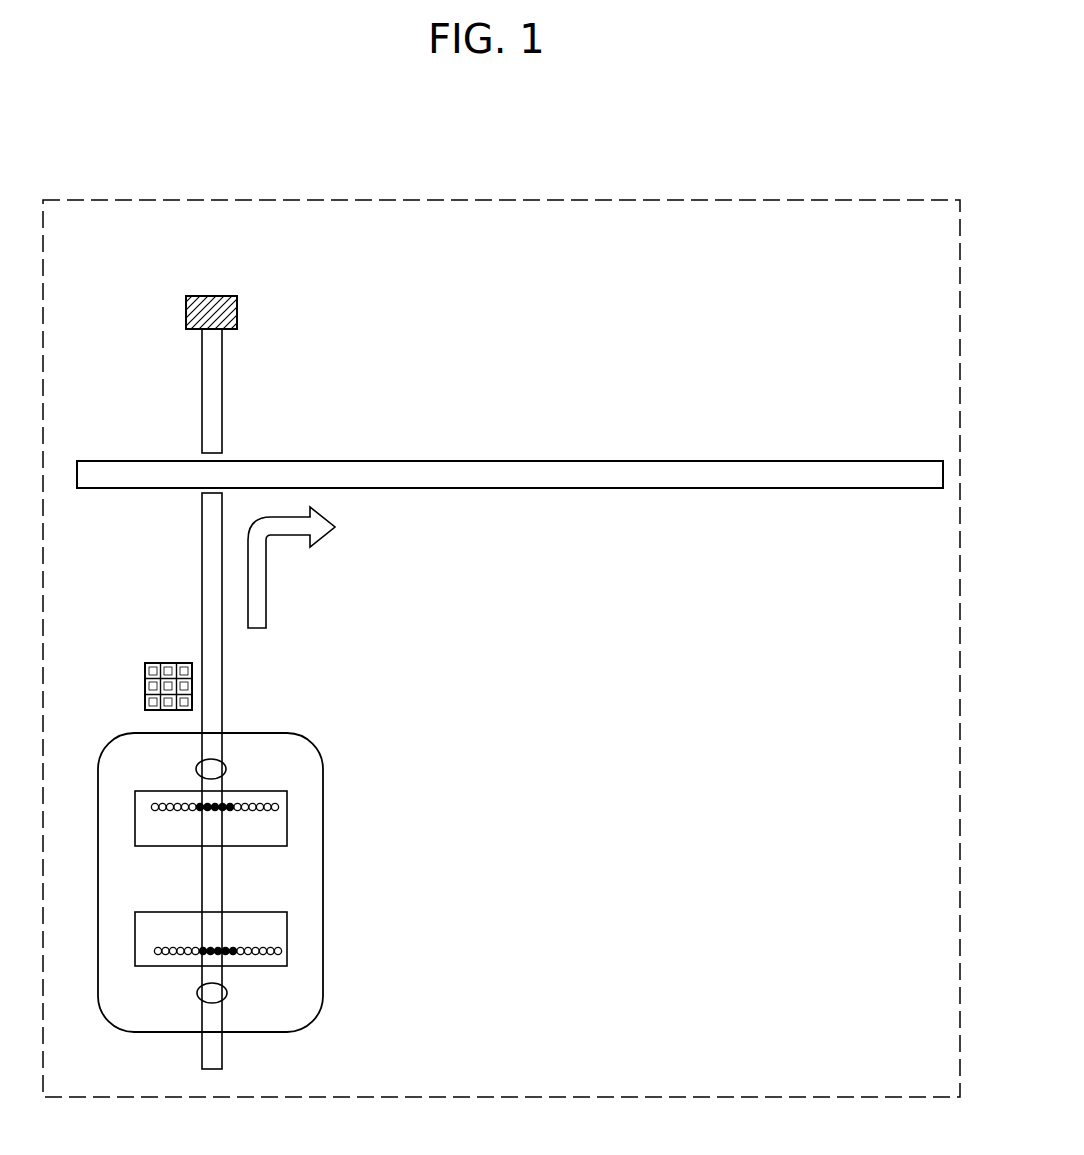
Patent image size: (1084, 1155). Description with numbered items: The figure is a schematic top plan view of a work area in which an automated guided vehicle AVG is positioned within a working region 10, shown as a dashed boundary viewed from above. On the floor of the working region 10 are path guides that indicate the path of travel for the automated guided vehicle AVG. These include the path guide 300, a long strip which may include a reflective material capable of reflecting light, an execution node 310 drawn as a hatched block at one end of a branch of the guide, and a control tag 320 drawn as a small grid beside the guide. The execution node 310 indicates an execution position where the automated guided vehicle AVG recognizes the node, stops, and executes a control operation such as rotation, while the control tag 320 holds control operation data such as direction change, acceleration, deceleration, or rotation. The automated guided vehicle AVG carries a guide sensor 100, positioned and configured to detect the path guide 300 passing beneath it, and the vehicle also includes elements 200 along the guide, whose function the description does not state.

The working region 10 is at (780, 200).
The path guide 300 is at (713, 461).
The execution node 310 is at (212, 296).
The control tag 320 is at (145, 683).
The bearings 200 is at (226, 768).
The guide sensor 100 is at (287, 820).
The automated guided vehicle AVG is at (323, 900).